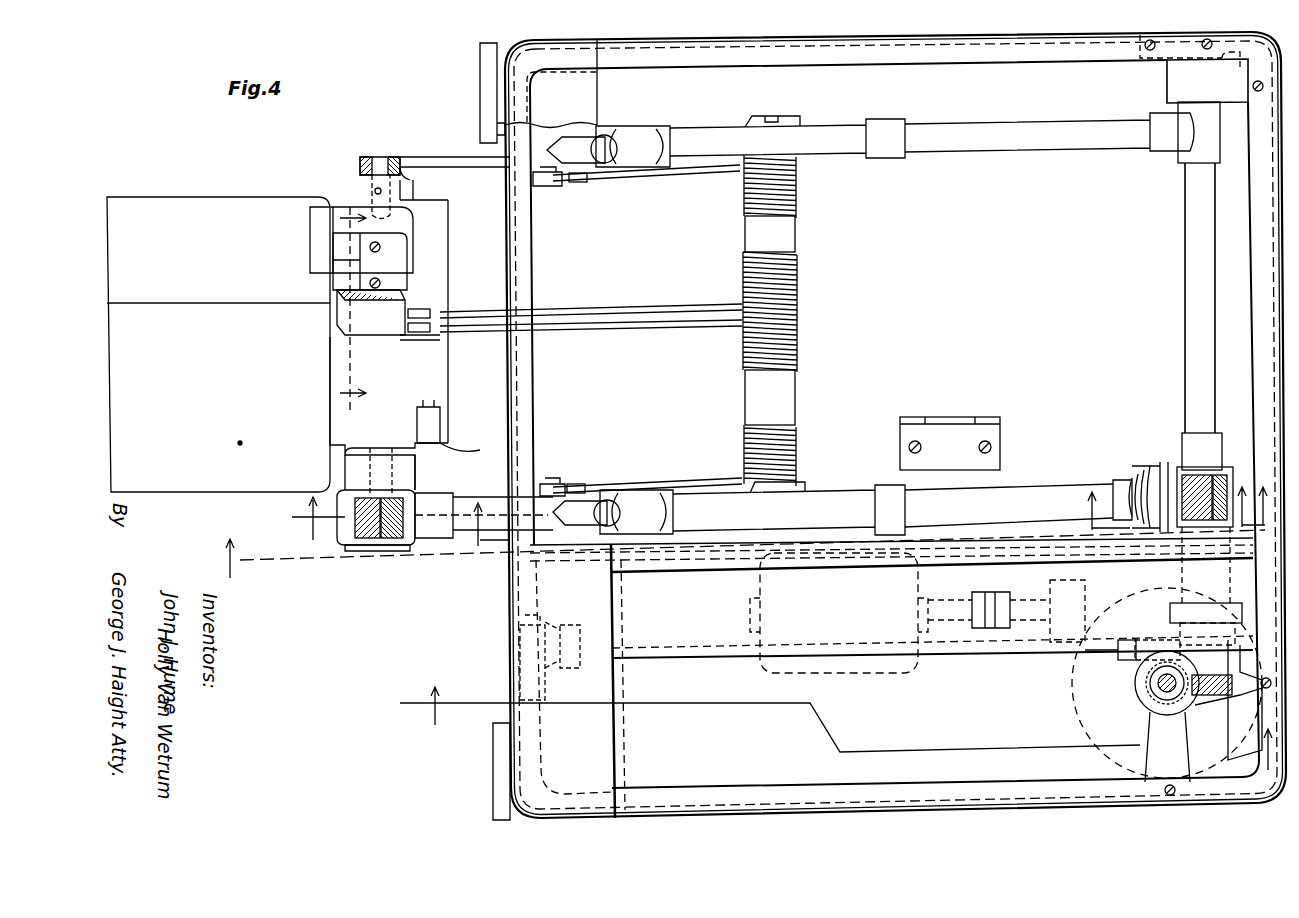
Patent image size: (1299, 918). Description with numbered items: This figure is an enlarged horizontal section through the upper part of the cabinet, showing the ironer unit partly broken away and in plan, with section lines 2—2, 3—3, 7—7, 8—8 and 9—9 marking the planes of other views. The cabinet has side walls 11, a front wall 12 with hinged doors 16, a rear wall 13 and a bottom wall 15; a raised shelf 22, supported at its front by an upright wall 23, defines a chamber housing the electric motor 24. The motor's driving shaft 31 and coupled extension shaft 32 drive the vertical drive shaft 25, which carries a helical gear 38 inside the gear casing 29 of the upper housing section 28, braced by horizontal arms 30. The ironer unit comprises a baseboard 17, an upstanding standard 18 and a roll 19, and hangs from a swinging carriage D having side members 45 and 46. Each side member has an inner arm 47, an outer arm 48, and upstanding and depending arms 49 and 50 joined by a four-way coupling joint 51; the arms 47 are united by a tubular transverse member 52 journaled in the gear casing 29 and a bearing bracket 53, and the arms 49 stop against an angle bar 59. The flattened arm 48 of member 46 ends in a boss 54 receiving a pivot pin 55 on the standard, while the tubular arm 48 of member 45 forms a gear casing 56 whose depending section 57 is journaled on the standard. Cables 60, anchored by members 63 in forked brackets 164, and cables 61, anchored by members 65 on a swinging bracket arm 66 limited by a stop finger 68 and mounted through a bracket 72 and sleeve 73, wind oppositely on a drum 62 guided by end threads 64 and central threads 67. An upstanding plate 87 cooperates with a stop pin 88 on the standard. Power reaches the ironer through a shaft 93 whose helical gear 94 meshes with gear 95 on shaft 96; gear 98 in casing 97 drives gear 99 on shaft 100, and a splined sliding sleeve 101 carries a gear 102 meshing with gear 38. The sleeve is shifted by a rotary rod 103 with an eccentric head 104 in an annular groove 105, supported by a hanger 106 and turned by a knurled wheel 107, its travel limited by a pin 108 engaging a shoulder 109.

The section line 2- 2 is at (739, 532).
The section line 3- 3 is at (837, 738).
The section line 7- 7 is at (390, 526).
The section line 8- 8 is at (1176, 511).
The section line 9- 9 is at (364, 287).
The side walls 11 is at (1006, 44).
The front wall 12 is at (510, 430).
The rear wall 13 is at (1270, 348).
The bottom wall 15 is at (1010, 391).
The hinged doors 16 is at (480, 62).
The baseboard 17 is at (137, 210).
The standard 18 is at (379, 335).
The ironer roll 19 is at (208, 480).
The shelf 22 is at (891, 649).
The upright wall 23 is at (625, 684).
The electric motor 24 is at (878, 668).
The vertical drive shaft 25 is at (1160, 690).
The section 28 is at (1195, 705).
The gear casing 29 is at (1175, 603).
The bracing and supporting arms 30 is at (1167, 753).
The driving shaft 31 is at (946, 603).
The extension shaft 32 is at (1022, 600).
The helical gear 38 is at (1150, 683).
The side member 45 is at (1015, 490).
The side member 46 is at (990, 152).
The inner arm 47 is at (712, 130).
The outer arm 48 is at (580, 140).
The upstanding arm 49 is at (605, 140).
The depending arm 50 is at (797, 128).
The four-way coupling joint 51 is at (640, 130).
The transverse member 52 is at (1185, 333).
The bearing bracket 53 is at (1168, 82).
The bosslike end portion 54 is at (428, 157).
The pivot pin 55 is at (382, 160).
The gear casing 56 is at (390, 540).
The depending section 57 is at (415, 470).
The angle bar 59 is at (532, 246).
The cable members 60 is at (658, 172).
The cable members 61 is at (652, 306).
The drum 62 is at (797, 386).
The anchoring member 63 is at (576, 185).
The thread 64 is at (797, 191).
The anchoring members 65 is at (422, 310).
The swinging bracket arm 66 is at (395, 305).
The threads 67 is at (798, 268).
The stop finger 68 is at (408, 340).
The bracket 72 is at (392, 250).
The tubular sleeve section 73 is at (362, 270).
The upstanding plate 87 is at (940, 422).
The stop pin 88 is at (451, 434).
The horizontal shaft 93 is at (372, 455).
The helical gear 94 is at (393, 455).
The helical gear 95 is at (360, 540).
The shaft 96 is at (870, 492).
The gear casing portion 97 is at (1172, 476).
The helical gear 98 is at (1195, 460).
The helical gear 99 is at (1228, 478).
The shaft 100 is at (1200, 585).
The sliding sleeve 101 is at (1236, 603).
The helical gear member 102 is at (1165, 690).
The rotary rod 103 is at (1000, 650).
The eccentric head 104 is at (1185, 590).
The annular groove 105 is at (1235, 648).
The hanger 106 is at (570, 632).
The knurled wheel 107 is at (518, 634).
The pin 108 is at (1125, 650).
The shoulder 109 is at (1130, 665).
The forked bracket 164 is at (552, 188).
The swinging carriage D is at (1060, 152).